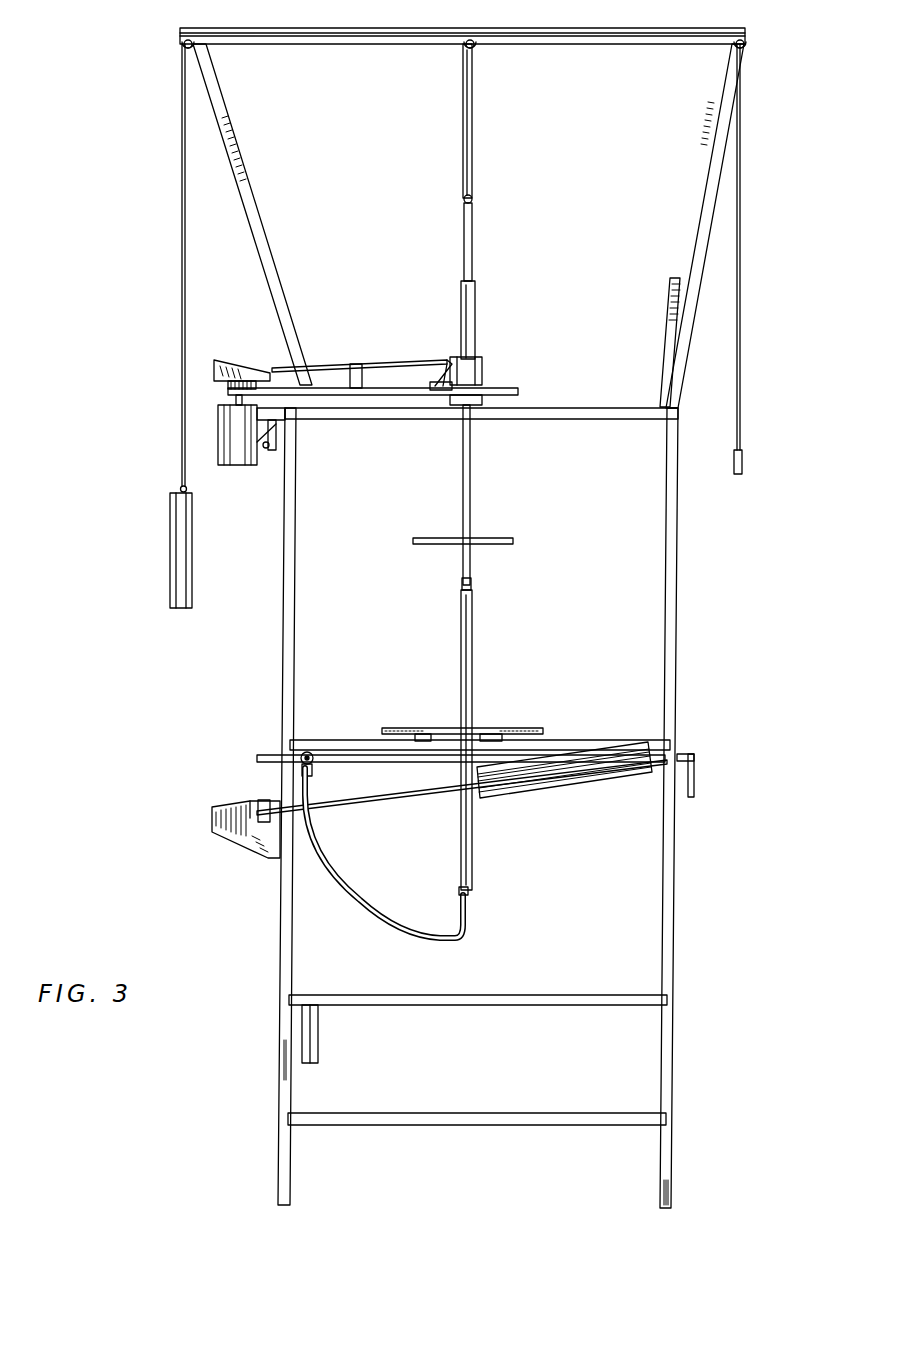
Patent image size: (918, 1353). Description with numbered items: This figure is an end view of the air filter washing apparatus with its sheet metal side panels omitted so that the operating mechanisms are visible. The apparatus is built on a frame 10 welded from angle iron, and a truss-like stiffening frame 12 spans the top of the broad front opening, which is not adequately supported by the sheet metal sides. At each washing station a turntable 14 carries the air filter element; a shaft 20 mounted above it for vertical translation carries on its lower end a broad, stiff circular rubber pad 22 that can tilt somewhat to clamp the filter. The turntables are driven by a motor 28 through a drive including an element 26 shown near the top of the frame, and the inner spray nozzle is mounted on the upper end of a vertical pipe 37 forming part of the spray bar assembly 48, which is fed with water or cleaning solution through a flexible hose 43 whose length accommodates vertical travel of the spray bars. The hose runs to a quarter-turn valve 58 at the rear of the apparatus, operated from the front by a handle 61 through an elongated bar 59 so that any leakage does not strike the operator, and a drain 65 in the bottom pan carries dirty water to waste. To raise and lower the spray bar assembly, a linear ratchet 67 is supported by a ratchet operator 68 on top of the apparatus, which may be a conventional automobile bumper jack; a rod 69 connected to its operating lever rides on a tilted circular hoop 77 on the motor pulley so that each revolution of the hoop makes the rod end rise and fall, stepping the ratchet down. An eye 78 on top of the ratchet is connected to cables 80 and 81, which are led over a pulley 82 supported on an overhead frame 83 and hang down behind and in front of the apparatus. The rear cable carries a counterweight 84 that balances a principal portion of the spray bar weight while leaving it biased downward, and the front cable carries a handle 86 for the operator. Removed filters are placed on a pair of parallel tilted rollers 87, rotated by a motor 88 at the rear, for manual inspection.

The apparatus frame 10 is at (679, 618).
The truss-like stiffening frame 12 is at (675, 280).
The turntable 14 is at (481, 727).
The shaft 20 is at (471, 495).
The circular rubber pad 22 is at (489, 538).
The link 26 is at (440, 378).
The motor 28 is at (249, 468).
The vertical pipe 37 is at (472, 654).
The flexible hose 43 is at (346, 884).
The spray bar assembly 48 is at (472, 578).
The quarter-turn valve 58 is at (309, 748).
The elongated bar 59 is at (403, 765).
The handle 61 is at (695, 780).
The drain 65 is at (319, 1040).
The linear ratchet 67 is at (474, 248).
The ratchet operator 68 is at (484, 368).
The rod 69 is at (345, 368).
The circular hoop 77 is at (237, 362).
The eye 78 is at (473, 199).
The cable 80 is at (180, 452).
The cable 81 is at (741, 344).
The pulley 82 is at (186, 38).
The frame 83 is at (228, 97).
The counterweight 84 is at (193, 572).
The handle 86 is at (743, 462).
The roller 87 is at (599, 798).
The motor 88 is at (222, 805).